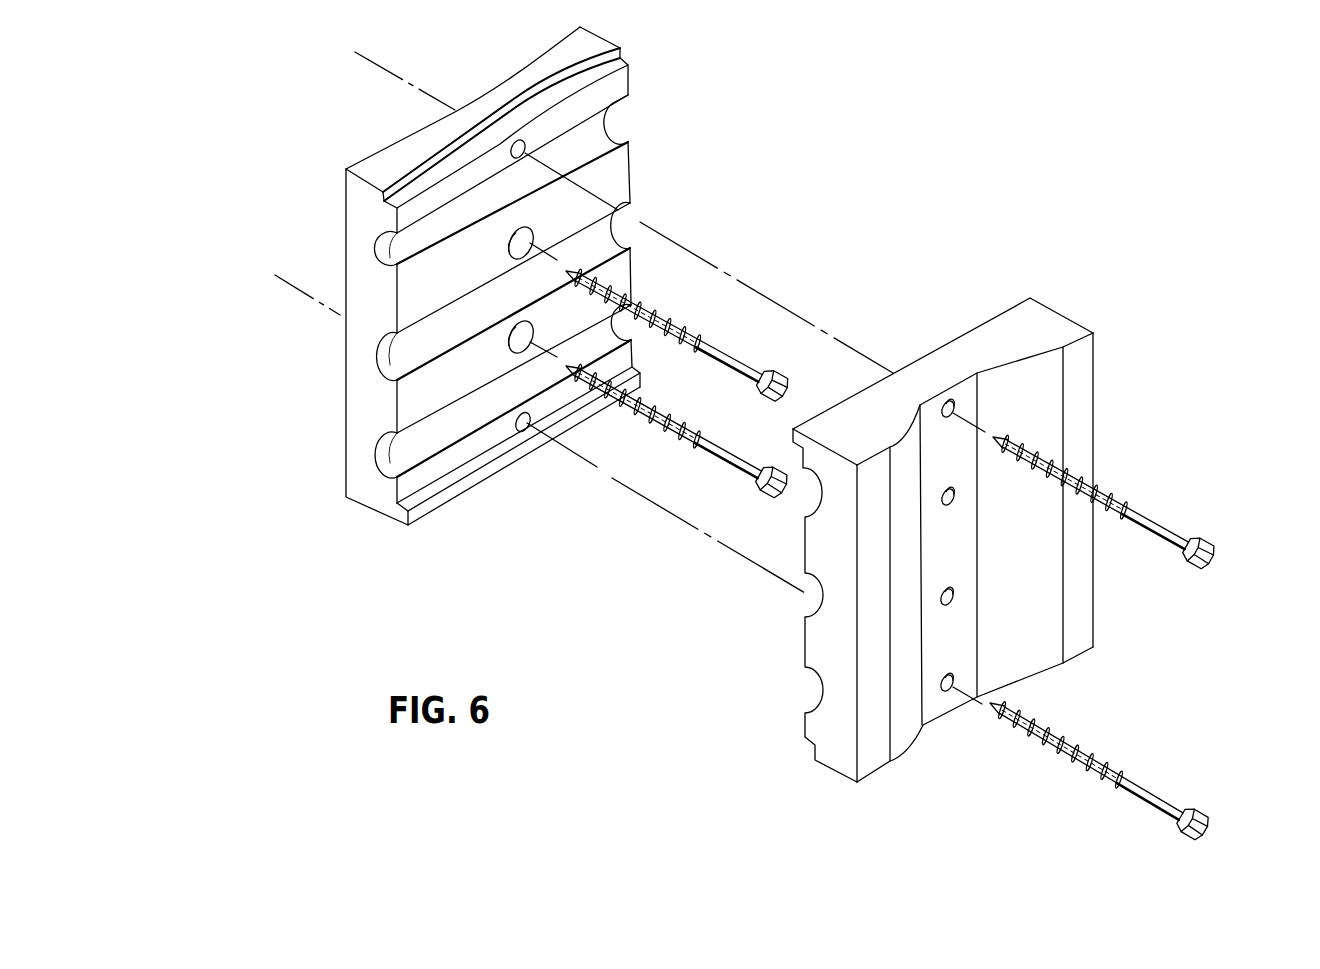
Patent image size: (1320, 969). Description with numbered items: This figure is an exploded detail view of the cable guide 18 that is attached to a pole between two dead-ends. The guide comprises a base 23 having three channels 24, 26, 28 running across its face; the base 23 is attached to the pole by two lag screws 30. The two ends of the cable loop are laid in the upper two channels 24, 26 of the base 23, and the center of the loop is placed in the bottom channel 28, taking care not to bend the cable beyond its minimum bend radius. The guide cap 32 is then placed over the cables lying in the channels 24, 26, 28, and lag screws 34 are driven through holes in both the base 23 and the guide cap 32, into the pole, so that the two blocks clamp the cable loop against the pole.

The first jaw block 18 is at (562, 318).
The base 23 is at (388, 513).
The channel 24 is at (383, 258).
The channel 26 is at (390, 357).
The channel 28 is at (392, 449).
The lag screws 30 is at (733, 375).
The guide cap 32 is at (833, 762).
The lag screws 34 is at (1143, 775).